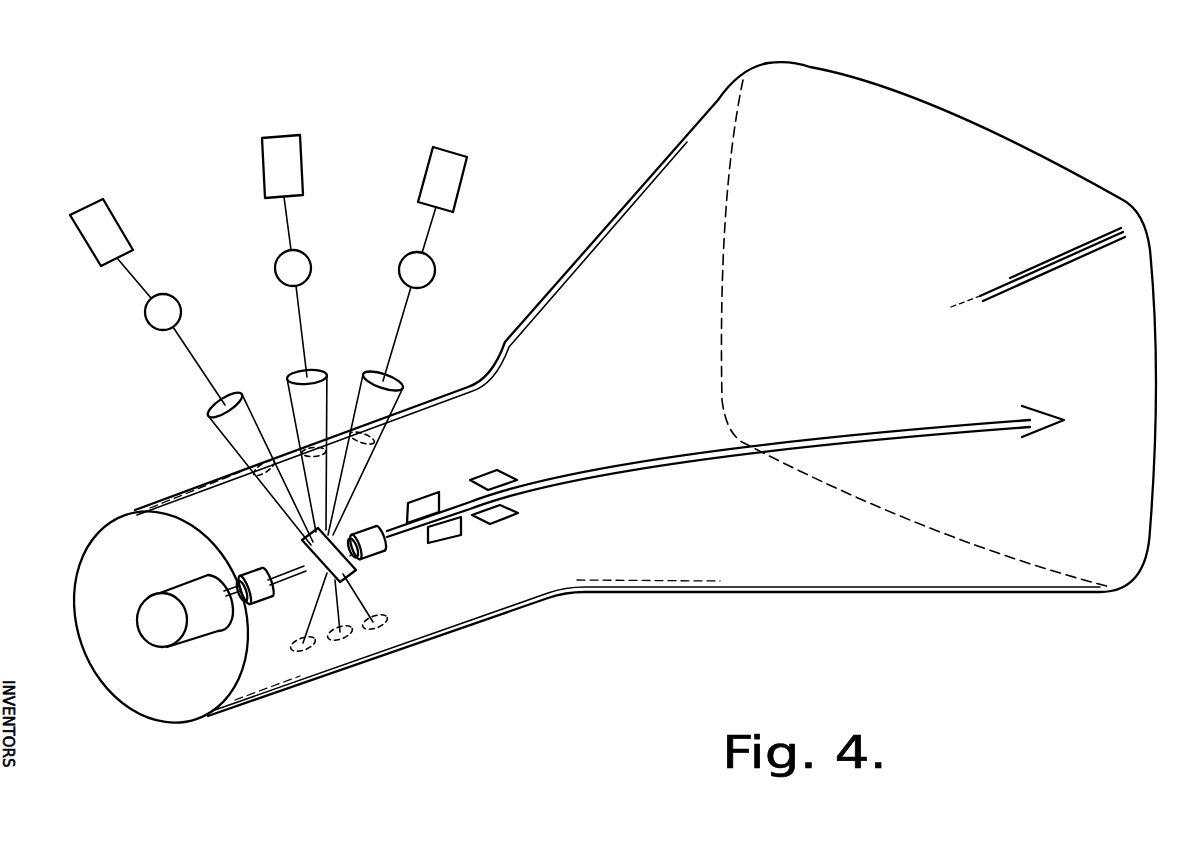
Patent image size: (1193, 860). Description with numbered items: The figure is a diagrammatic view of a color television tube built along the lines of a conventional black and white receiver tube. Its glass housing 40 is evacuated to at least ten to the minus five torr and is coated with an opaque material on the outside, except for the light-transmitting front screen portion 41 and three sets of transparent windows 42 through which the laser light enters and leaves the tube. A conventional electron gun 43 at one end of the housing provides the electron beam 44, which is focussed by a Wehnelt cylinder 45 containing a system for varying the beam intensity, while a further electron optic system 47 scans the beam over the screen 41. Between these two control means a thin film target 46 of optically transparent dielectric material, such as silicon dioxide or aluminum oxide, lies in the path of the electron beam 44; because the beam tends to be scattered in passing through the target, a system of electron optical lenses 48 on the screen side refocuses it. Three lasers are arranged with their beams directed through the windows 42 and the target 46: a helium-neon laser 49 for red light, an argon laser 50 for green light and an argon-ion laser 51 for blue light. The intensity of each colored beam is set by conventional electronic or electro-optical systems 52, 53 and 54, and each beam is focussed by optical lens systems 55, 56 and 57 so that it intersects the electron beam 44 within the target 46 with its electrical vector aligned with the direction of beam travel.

The glass housing 40 is at (887, 578).
The front screen portion 41 is at (1043, 152).
The transparent windows 42 is at (364, 440).
The electron gun 43 is at (197, 624).
The electron beam 44 is at (906, 440).
The Wehnelt cylinder 45 is at (258, 601).
The thin film target 46 is at (356, 572).
The electron optic system 47 is at (490, 545).
The system of electron optical lenses 48 is at (384, 553).
The helium-neon laser 49 is at (85, 214).
The argon laser 50 is at (285, 159).
The argon-ion laser 51 is at (467, 166).
The intensity control system 52 is at (205, 250).
The intensity control system 53 is at (279, 257).
The intensity control system 54 is at (260, 222).
The optical lens system 55 is at (208, 405).
The optical lens system 56 is at (289, 379).
The optical lens system 57 is at (284, 337).